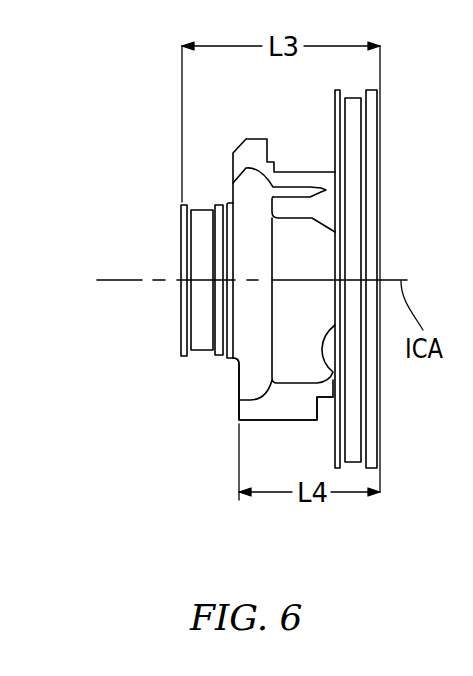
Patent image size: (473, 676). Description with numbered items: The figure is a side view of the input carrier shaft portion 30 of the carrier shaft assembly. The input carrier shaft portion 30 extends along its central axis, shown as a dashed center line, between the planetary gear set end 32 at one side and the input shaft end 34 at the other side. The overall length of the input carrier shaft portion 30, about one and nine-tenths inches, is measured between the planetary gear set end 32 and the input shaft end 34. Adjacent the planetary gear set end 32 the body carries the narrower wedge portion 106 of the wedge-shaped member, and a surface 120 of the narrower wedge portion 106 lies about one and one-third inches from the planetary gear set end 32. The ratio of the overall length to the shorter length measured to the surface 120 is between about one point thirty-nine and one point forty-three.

The input carrier shaft portion 30 is at (120, 87).
The planetary gear set end 32 is at (382, 234).
The input shaft end 34 is at (182, 247).
The narrower wedge portion 106 is at (239, 418).
The surface of the narrower wedge portion 120 is at (238, 378).